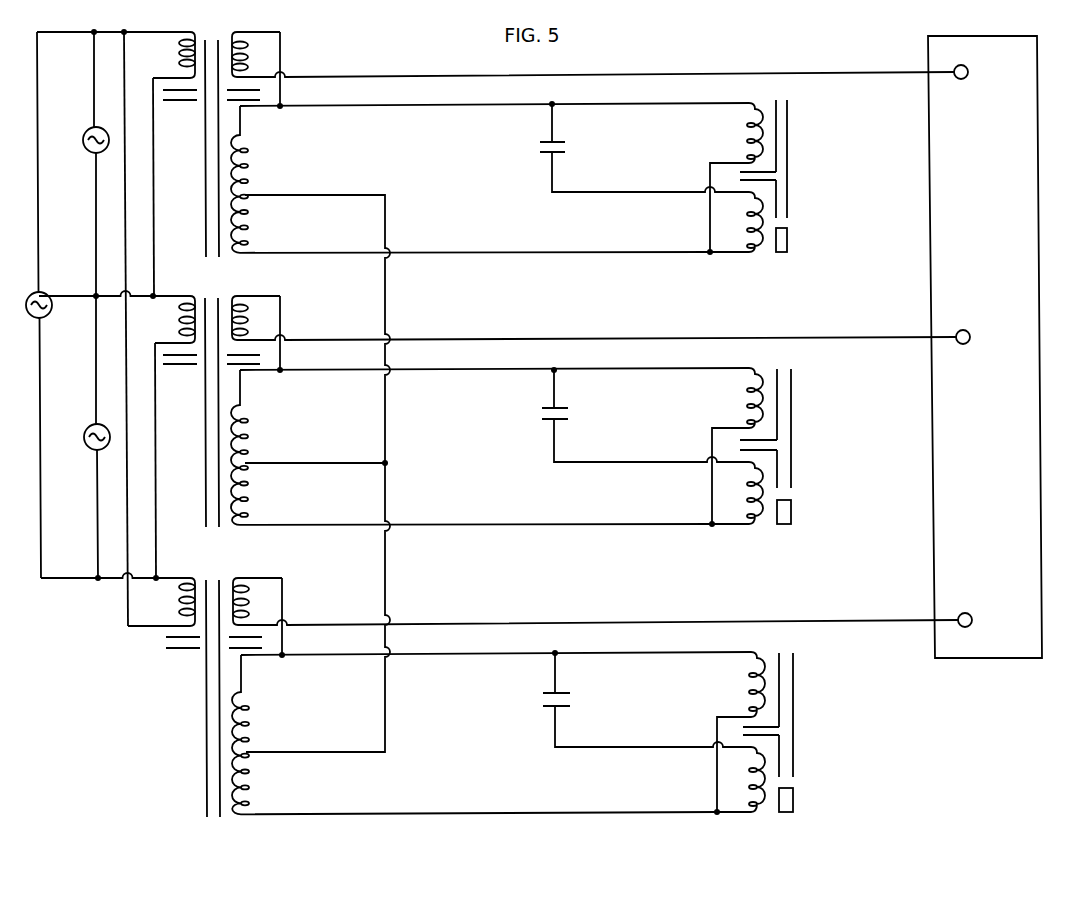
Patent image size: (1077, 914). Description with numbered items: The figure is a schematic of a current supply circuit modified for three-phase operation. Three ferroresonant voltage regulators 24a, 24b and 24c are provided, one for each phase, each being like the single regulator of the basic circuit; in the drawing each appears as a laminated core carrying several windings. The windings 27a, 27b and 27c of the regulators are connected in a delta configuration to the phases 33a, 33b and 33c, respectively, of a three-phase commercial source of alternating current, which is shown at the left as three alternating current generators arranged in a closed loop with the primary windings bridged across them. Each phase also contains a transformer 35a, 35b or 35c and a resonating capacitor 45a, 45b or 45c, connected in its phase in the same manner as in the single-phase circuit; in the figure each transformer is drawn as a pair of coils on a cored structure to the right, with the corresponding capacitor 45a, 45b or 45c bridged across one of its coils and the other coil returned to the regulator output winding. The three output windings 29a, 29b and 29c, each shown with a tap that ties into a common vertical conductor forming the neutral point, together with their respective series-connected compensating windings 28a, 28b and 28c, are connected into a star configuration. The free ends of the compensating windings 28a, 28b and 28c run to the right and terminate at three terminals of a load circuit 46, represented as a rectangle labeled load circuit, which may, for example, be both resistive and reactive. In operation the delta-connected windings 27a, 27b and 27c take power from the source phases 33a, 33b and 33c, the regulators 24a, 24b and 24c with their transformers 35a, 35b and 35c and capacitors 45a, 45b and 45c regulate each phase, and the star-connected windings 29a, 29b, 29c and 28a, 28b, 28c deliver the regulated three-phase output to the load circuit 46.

The ferroresonant voltage regulator 24a is at (211, 136).
The ferroresonant voltage regulator 24b is at (211, 403).
The ferroresonant voltage regulator 24c is at (214, 689).
The winding 27a is at (159, 47).
The winding 27b is at (169, 311).
The winding 27c is at (161, 594).
The compensating winding 28a is at (593, 47).
The compensating winding 28b is at (594, 310).
The compensating winding 28c is at (595, 593).
The output winding 29a is at (470, 179).
The output winding 29b is at (471, 447).
The output winding 29c is at (474, 734).
The phase of three-phase commercial source of alternating current 33a is at (79, 140).
The phase of three-phase commercial source of alternating current 33b is at (79, 437).
The phase of three-phase commercial source of alternating current 33c is at (56, 305).
The transformer 35a is at (769, 176).
The transformer 35b is at (771, 446).
The transformer 35c is at (775, 732).
The resonating capacitor 45a is at (644, 148).
The resonating capacitor 45b is at (645, 416).
The resonating capacitor 45c is at (647, 700).
The load circuit 46 is at (998, 347).